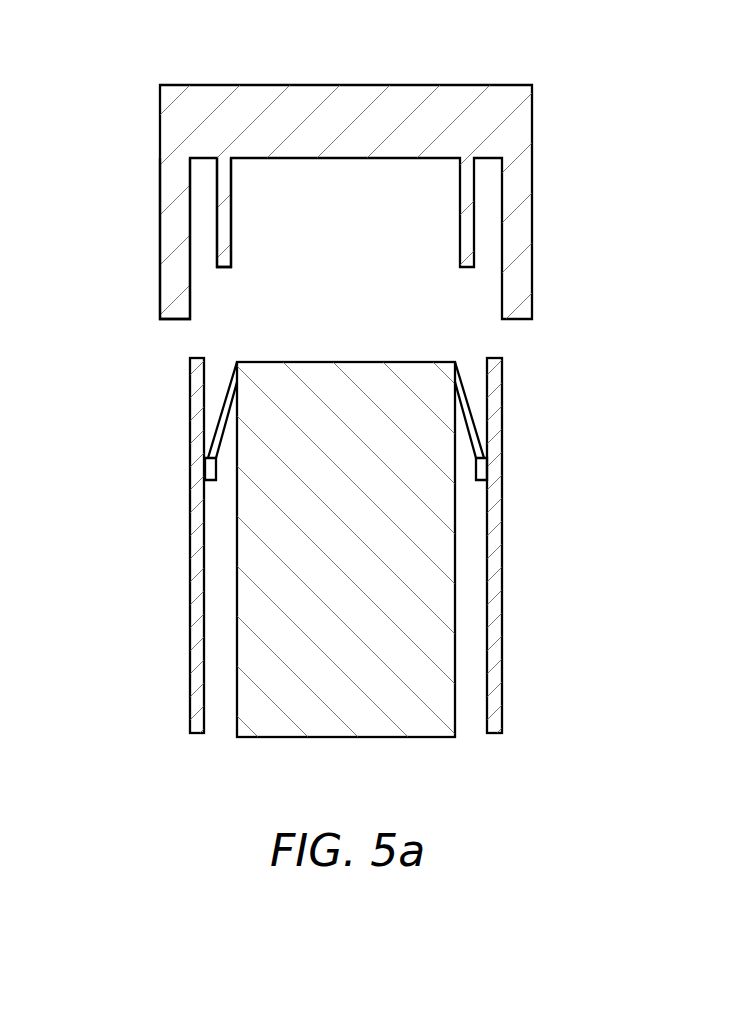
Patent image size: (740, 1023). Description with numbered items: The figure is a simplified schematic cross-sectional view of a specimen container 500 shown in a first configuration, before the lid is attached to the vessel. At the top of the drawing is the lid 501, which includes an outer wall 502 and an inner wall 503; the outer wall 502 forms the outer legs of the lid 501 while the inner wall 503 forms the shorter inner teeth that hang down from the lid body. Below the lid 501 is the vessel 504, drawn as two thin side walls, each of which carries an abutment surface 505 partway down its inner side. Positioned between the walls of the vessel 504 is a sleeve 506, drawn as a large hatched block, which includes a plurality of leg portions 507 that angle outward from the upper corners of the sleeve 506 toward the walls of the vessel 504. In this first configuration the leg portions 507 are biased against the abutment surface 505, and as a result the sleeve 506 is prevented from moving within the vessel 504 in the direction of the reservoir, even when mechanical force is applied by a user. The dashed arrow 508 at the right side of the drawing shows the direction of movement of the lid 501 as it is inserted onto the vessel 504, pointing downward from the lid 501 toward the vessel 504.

The specimen container 500 is at (108, 50).
The lid 501 is at (532, 98).
The outer wall 502 is at (160, 285).
The inner wall 503 is at (231, 253).
The vessel 504 is at (502, 612).
The abutment surface 505 is at (210, 481).
The sleeve 506 is at (345, 737).
The leg portions 507 is at (220, 432).
The dashed arrow 508 is at (565, 185).